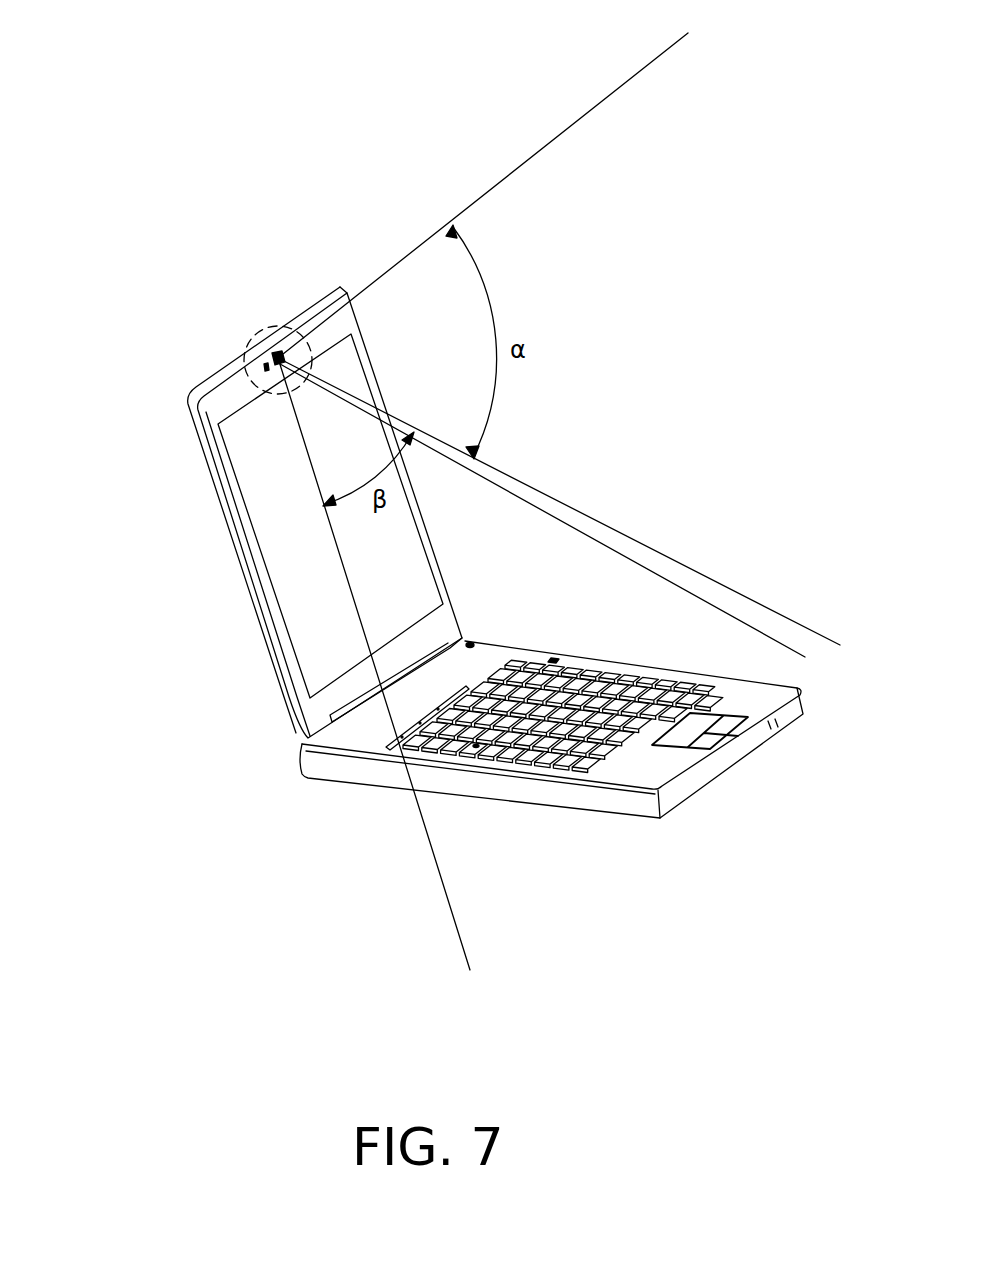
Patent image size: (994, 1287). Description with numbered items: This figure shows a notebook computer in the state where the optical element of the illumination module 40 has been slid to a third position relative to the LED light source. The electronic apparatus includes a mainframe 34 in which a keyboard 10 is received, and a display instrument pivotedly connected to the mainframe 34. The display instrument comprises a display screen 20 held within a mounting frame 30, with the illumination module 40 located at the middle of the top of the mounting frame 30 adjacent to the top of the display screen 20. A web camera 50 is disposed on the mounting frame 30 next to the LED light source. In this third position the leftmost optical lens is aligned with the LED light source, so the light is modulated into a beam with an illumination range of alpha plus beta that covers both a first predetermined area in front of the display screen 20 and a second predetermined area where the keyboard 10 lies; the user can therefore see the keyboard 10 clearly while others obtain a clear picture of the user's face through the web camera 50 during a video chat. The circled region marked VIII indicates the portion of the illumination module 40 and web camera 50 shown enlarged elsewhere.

The keyboard 10 is at (572, 725).
The display screen 20 is at (295, 605).
The mounting frame 30 is at (240, 555).
The mainframe 34 is at (752, 693).
The illumination module 40 is at (273, 359).
The web camera 50 is at (263, 371).
The detail view callout VIII is at (257, 332).